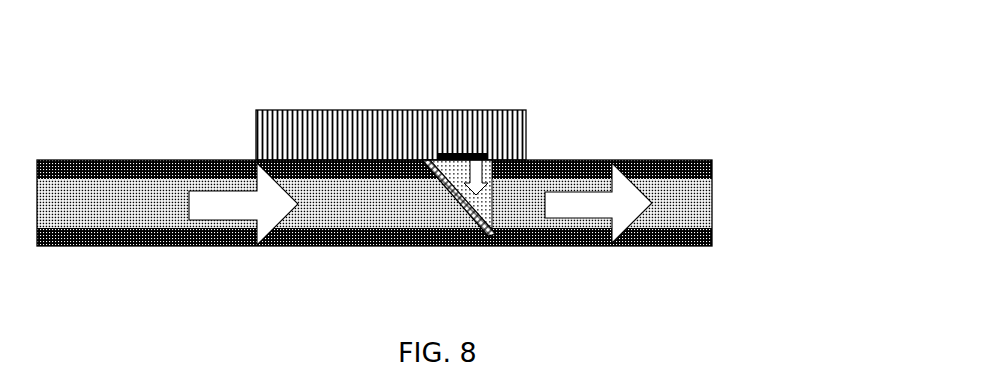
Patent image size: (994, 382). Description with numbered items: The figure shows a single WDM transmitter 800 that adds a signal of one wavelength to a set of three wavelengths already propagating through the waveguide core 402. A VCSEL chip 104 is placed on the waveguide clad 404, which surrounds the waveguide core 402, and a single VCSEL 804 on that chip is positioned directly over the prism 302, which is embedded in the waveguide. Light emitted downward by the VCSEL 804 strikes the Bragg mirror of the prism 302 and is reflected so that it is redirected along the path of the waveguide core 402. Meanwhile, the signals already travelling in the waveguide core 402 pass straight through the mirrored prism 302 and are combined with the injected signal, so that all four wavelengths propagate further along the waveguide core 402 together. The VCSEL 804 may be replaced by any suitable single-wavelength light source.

The WDM transmitter 800 is at (430, 159).
The VCSEL chip 104 is at (342, 110).
The VCSEL 804 is at (473, 153).
The prism 302 is at (453, 212).
The waveguide clad 404 is at (712, 163).
The waveguide core 402 is at (712, 208).